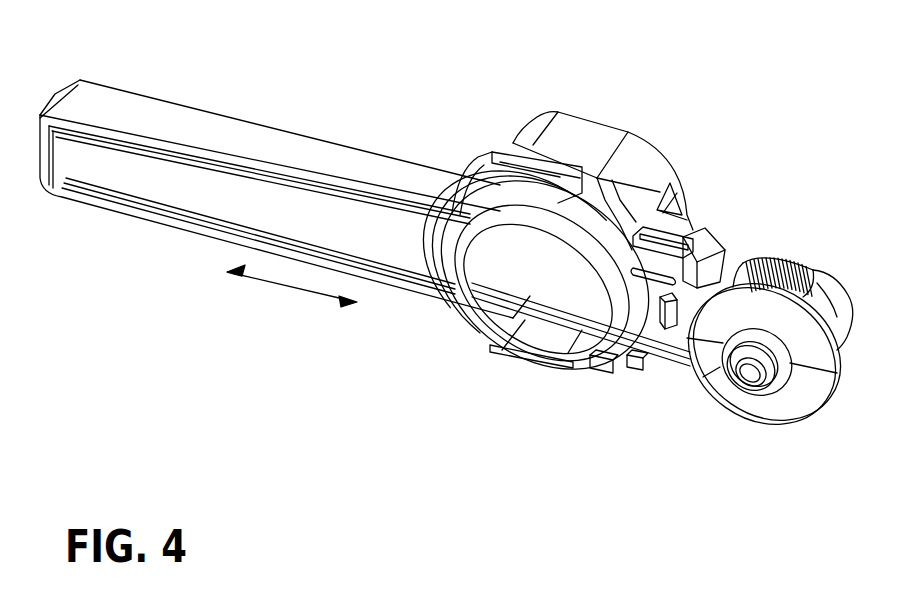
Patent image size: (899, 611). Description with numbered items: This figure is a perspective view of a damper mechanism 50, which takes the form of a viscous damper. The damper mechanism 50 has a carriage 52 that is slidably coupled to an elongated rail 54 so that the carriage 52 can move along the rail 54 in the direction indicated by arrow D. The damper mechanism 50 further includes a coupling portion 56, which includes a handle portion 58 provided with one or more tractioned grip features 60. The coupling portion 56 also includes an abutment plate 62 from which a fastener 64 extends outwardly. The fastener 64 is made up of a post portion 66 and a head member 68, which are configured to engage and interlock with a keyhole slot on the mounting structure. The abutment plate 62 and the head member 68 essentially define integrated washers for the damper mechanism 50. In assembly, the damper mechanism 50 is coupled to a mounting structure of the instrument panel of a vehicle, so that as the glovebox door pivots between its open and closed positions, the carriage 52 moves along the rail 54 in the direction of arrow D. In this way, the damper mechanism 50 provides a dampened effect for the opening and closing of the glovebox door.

The damper mechanism 50 is at (290, 108).
The carriage 52 is at (583, 103).
The rail 54 is at (168, 197).
The coupling portion 56 is at (803, 254).
The handle portion 58 is at (827, 300).
The tractioned grip features 60 is at (773, 262).
The abutment plate 62 is at (810, 398).
The fastener 64 is at (718, 376).
The post portion 66 is at (793, 378).
The head member 68 is at (746, 385).
The arrow D is at (288, 290).